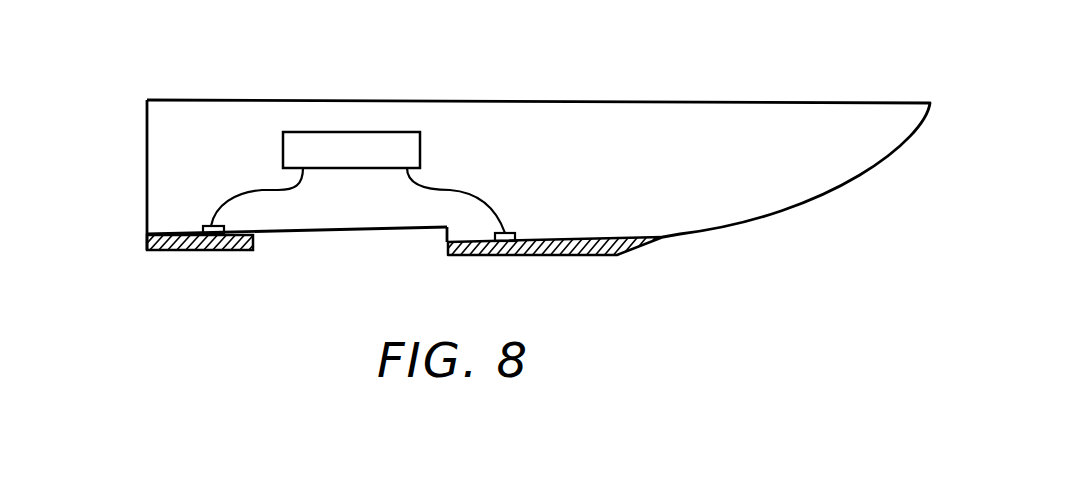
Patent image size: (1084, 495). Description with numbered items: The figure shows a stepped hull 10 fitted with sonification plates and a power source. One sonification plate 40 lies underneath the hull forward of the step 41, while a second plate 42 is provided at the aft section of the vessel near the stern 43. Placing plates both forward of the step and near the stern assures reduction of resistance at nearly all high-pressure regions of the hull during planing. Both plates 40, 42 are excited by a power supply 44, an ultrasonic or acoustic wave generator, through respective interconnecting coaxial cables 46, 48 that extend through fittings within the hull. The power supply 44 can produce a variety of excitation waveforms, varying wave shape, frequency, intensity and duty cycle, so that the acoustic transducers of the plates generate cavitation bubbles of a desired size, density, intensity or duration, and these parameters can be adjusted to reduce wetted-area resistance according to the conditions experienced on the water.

The boat hull 10 is at (772, 187).
The sonification plate 40 is at (550, 255).
The step 41 is at (447, 240).
The sonification plate 42 is at (203, 251).
The stern 43 is at (147, 193).
The power supply 44 is at (420, 148).
The coaxial cable 46 is at (259, 190).
The coaxial cable 48 is at (486, 208).